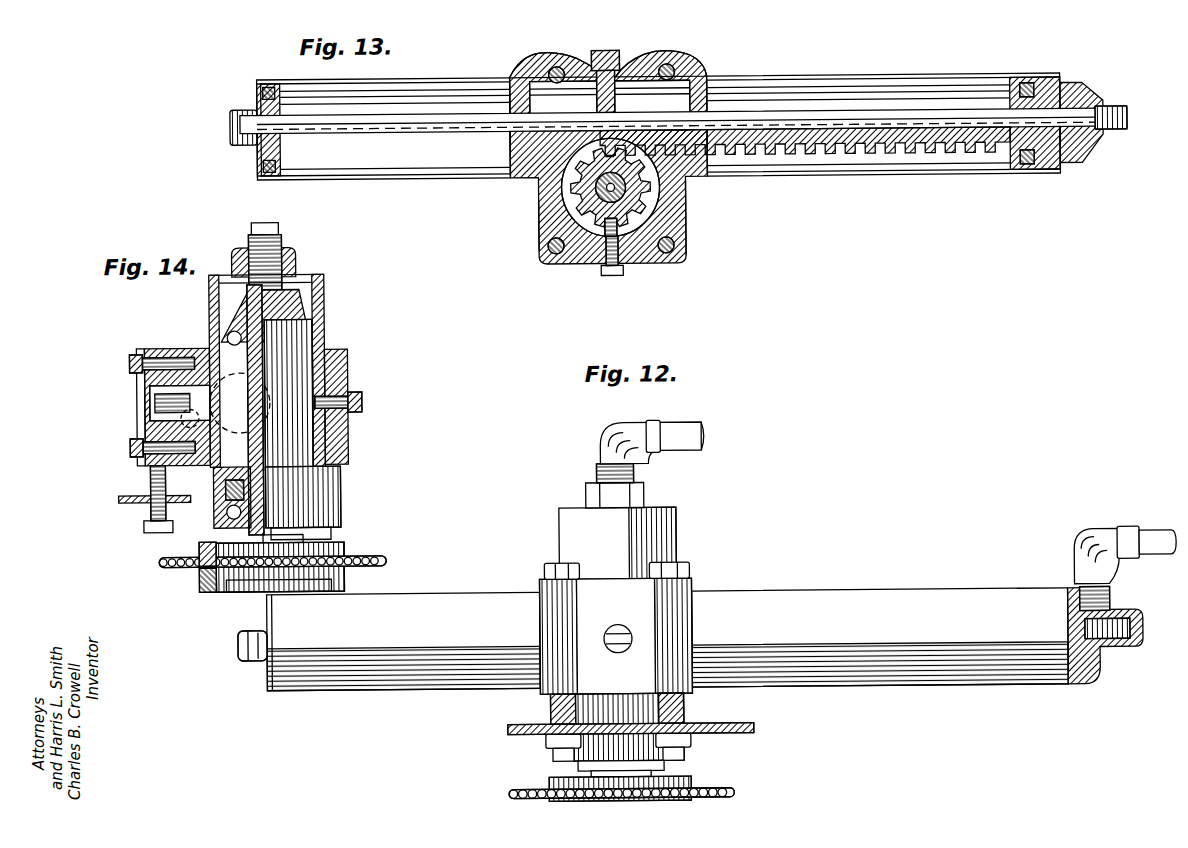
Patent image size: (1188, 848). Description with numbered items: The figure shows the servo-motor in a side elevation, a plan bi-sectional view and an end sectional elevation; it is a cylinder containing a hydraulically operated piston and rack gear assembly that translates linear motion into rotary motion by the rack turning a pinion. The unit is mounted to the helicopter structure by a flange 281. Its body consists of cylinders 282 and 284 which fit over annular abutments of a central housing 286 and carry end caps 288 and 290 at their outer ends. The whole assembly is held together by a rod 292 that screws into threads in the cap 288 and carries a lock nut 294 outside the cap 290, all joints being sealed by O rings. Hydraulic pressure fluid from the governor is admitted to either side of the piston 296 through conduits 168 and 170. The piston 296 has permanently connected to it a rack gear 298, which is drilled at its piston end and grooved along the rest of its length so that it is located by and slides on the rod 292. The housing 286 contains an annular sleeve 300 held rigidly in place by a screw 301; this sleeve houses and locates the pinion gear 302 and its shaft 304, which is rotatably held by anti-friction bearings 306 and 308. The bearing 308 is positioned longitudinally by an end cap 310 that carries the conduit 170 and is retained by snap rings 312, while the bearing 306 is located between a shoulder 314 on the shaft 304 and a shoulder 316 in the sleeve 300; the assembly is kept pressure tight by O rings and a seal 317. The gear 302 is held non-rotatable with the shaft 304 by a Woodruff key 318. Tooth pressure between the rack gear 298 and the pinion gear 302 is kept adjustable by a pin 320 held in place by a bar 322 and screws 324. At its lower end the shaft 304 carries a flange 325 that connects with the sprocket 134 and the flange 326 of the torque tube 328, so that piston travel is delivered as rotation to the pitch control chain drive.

In FIG. 14, the sprocket 134 is at (176, 562).
In FIG. 12, the sprocket 134 is at (700, 788).
In FIG. 12, the conduit 168 is at (1140, 540).
In FIG. 14, the conduit 170 is at (256, 223).
In FIG. 12, the conduit 170 is at (695, 427).
In FIG. 14, the flange 281 is at (118, 499).
In FIG. 12, the flange 281 is at (742, 723).
In FIG. 13, the cylinder 282 is at (882, 177).
In FIG. 12, the cylinder 282 is at (845, 600).
In FIG. 13, the cylinder 284 is at (396, 177).
In FIG. 12, the cylinder 284 is at (428, 598).
In FIG. 13, the housing 286 is at (690, 190).
In FIG. 14, the housing 286 is at (340, 425).
In FIG. 12, the housing 286 is at (600, 622).
In FIG. 13, the end cap 288 is at (1078, 98).
In FIG. 12, the end cap 288 is at (1090, 672).
In FIG. 13, the end cap 290 is at (257, 157).
In FIG. 12, the end cap 290 is at (267, 672).
In FIG. 13, the rod 292 is at (372, 128).
In FIG. 14, the rod 292 is at (185, 422).
In FIG. 13, the lock nut 294 is at (244, 108).
In FIG. 12, the lock nut 294 is at (243, 650).
In FIG. 13, the piston 296 is at (1020, 175).
In FIG. 13, the rack gear 298 is at (962, 152).
In FIG. 14, the rack gear 298 is at (212, 385).
In FIG. 13, the annular sleeve 300 is at (690, 218).
In FIG. 14, the annular sleeve 300 is at (212, 287).
In FIG. 13, the screw 301 is at (622, 270).
In FIG. 14, the screw 301 is at (360, 404).
In FIG. 12, the screw 301 is at (648, 600).
In FIG. 13, the pinion gear 302 is at (606, 228).
In FIG. 14, the pinion gear 302 is at (300, 395).
In FIG. 13, the shaft 304 is at (540, 225).
In FIG. 14, the shaft 304 is at (330, 447).
In FIG. 14, the anti-friction bearing 306 is at (226, 515).
In FIG. 14, the anti-friction bearing 308 is at (228, 334).
In FIG. 14, the end cap 310 is at (300, 290).
In FIG. 14, the snap rings 312 is at (327, 284).
In FIG. 14, the shoulder 314 is at (302, 540).
In FIG. 14, the shoulder 316 is at (335, 494).
In FIG. 14, the seal 317 is at (226, 492).
In FIG. 13, the Woodruff key 318 is at (580, 190).
In FIG. 14, the Woodruff key 318 is at (222, 460).
In FIG. 13, the pin 320 is at (650, 64).
In FIG. 14, the pin 320 is at (165, 406).
In FIG. 13, the bar 322 is at (585, 62).
In FIG. 14, the bar 322 is at (148, 386).
In FIG. 13, the screws 324 is at (612, 52).
In FIG. 14, the screws 324 is at (135, 360).
In FIG. 14, the flange 325 is at (210, 551).
In FIG. 14, the flange 326 is at (206, 578).
In FIG. 14, the torque tube 328 is at (232, 592).